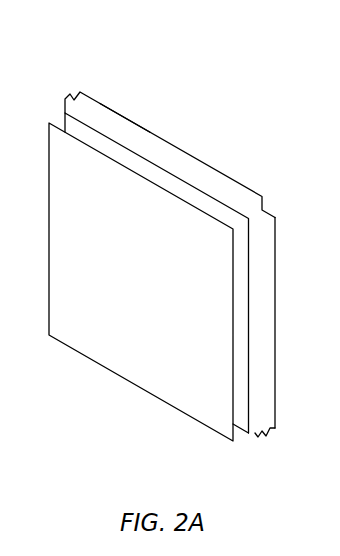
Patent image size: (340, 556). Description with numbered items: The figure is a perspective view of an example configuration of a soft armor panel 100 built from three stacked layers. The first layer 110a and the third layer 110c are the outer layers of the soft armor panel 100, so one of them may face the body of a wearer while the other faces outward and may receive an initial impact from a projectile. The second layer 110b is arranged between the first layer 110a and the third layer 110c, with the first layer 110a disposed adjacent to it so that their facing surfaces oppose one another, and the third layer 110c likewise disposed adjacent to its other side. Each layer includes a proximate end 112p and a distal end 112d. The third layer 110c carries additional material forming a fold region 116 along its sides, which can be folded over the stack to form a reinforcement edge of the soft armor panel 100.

The soft armor panel 100 is at (90, 57).
The first layer 110a is at (84, 358).
The second layer 110b is at (65, 128).
The third layer 110c is at (277, 316).
The proximate end 112p is at (208, 147).
The distal end 112d is at (237, 456).
The fold region 116 is at (127, 127).